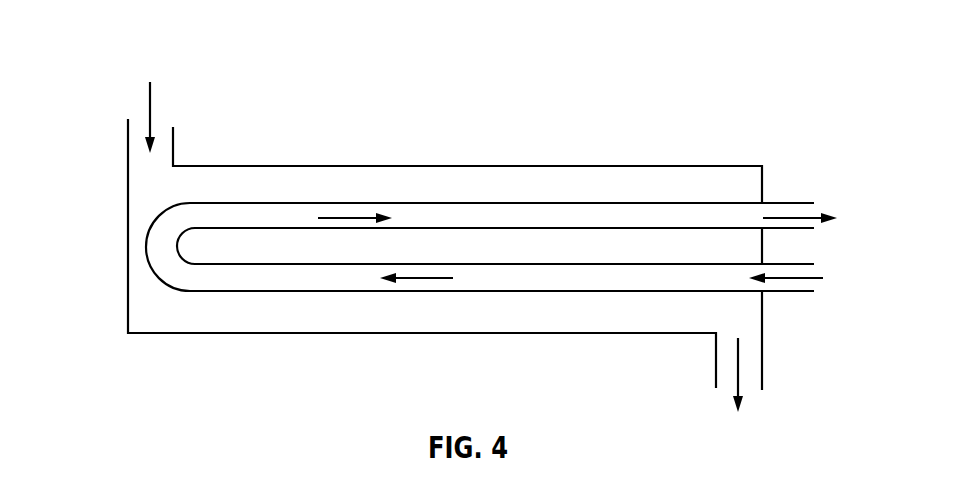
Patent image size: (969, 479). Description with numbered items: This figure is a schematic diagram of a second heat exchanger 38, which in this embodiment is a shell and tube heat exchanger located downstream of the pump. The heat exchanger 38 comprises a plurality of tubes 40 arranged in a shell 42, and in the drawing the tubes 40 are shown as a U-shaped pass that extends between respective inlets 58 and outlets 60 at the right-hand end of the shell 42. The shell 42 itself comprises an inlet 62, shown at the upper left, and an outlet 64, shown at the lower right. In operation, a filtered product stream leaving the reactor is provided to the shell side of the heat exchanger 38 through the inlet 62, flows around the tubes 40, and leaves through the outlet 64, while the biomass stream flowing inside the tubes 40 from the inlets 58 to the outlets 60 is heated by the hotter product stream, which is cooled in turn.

The second heat exchanger 38 is at (557, 35).
The tubes 40 is at (402, 204).
The shell 42 is at (480, 165).
The inlets 58 is at (787, 291).
The outlets 60 is at (779, 202).
The inlet 62 is at (128, 155).
The outlet 64 is at (716, 365).